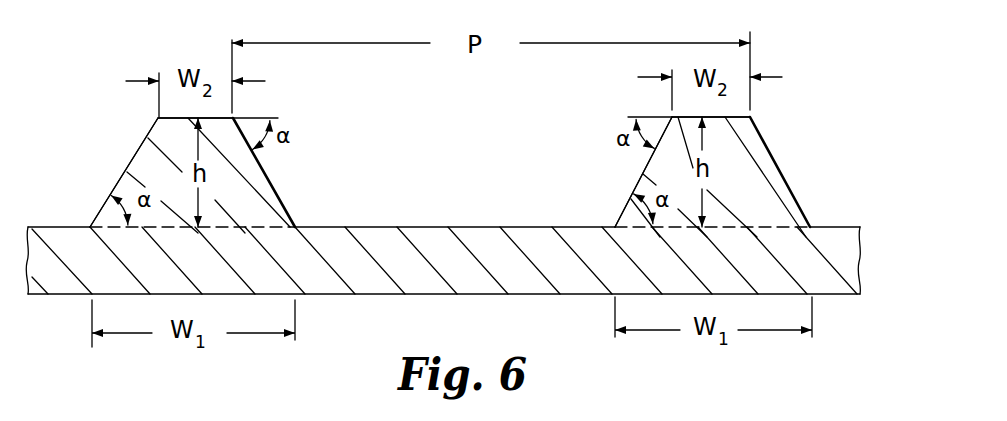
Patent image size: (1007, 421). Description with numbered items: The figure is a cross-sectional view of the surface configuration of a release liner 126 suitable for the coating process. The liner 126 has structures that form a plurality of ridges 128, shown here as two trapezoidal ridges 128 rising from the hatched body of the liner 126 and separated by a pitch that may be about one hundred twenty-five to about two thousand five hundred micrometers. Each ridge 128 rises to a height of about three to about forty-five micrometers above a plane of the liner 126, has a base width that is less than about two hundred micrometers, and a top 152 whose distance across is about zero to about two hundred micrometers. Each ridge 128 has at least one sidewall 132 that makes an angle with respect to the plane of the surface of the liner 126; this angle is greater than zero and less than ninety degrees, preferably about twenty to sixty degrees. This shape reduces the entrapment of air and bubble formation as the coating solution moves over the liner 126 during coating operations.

The liner 126 is at (450, 196).
The ridge 128 is at (260, 185).
The sidewall 132 is at (125, 173).
The top of the ridge 152 is at (170, 118).